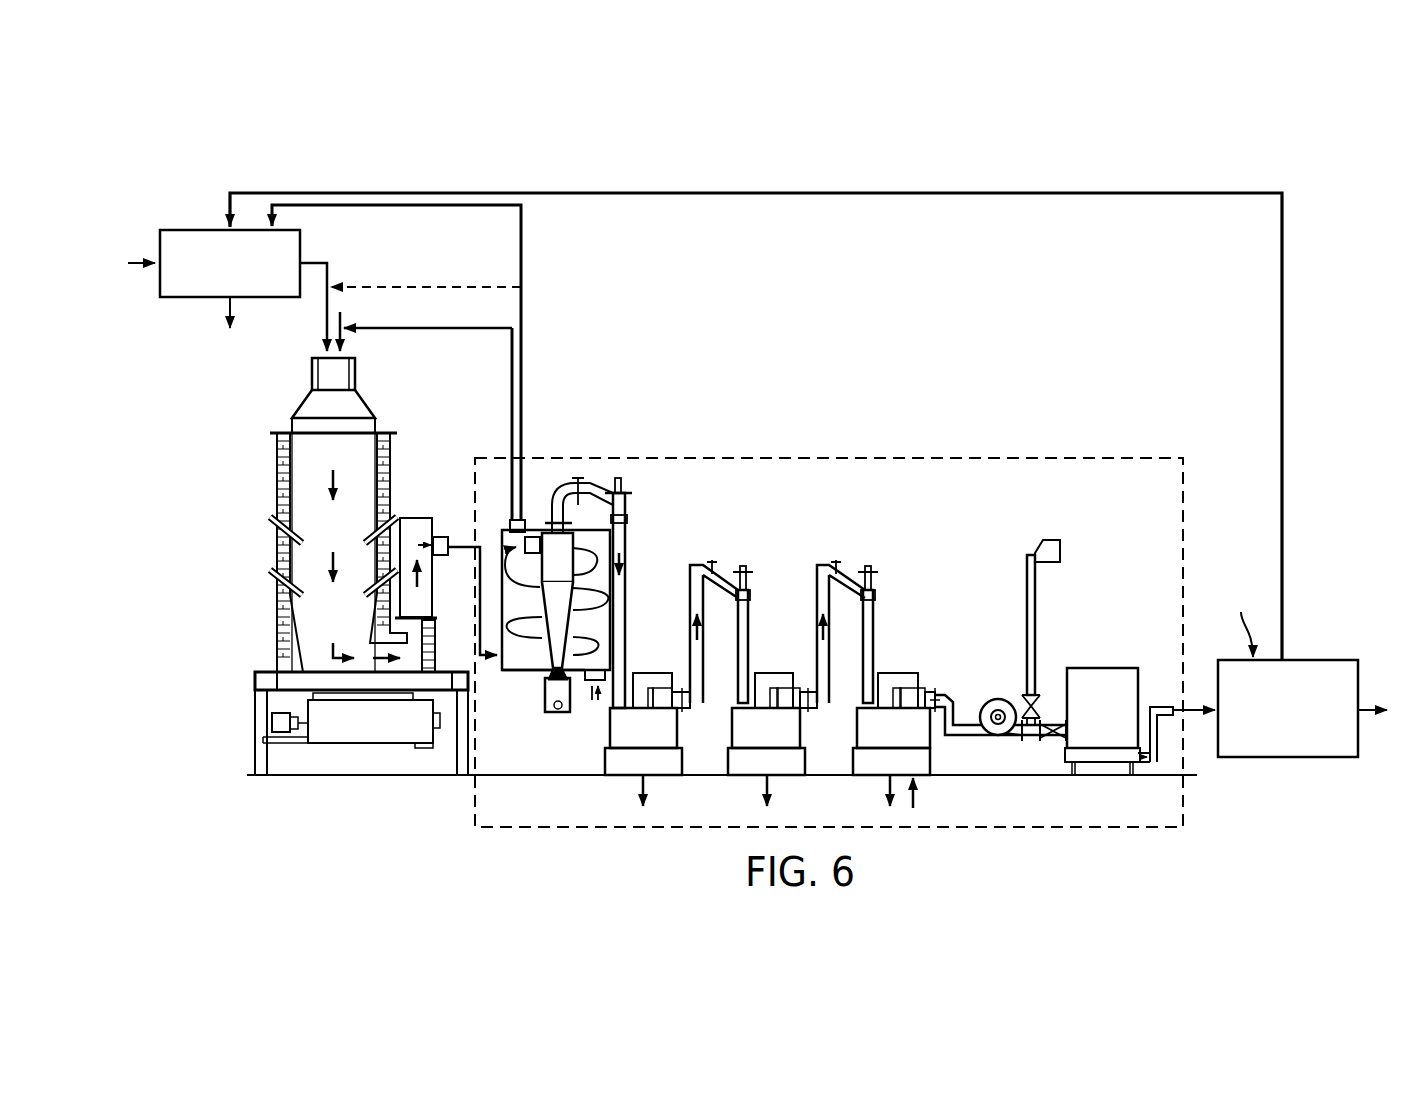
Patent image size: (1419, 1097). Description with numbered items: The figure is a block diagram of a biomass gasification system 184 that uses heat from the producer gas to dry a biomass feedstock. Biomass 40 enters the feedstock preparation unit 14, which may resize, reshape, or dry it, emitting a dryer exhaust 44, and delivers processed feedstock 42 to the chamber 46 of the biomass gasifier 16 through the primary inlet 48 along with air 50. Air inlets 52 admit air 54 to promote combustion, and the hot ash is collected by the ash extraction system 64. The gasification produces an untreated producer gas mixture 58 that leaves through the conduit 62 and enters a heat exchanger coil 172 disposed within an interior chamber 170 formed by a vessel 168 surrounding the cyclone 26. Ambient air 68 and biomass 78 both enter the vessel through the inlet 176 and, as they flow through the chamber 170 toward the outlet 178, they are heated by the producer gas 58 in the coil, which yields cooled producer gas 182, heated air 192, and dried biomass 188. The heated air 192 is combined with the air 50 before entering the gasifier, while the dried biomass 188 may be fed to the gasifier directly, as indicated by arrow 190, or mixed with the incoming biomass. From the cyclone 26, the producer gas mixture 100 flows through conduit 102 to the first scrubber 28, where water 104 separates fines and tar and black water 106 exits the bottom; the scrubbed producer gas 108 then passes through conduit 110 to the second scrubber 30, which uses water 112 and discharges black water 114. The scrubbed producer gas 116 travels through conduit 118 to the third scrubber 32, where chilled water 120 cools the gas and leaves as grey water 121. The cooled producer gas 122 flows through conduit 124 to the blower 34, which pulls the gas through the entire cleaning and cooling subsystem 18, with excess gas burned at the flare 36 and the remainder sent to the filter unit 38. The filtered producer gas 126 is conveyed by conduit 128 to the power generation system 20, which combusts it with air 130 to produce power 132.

The feedstock preparation unit 14 is at (204, 229).
The biomass gasifier 16 is at (394, 419).
The cleaning and cooling subsystem 18 is at (842, 457).
The power generation system 20 is at (1285, 757).
The cyclone 26 is at (574, 606).
The first scrubber 28 is at (678, 733).
The second scrubber 30 is at (802, 733).
The third scrubber 32 is at (932, 735).
The blower 34 is at (992, 701).
The flare 36 is at (1062, 550).
The filter unit 38 is at (1100, 668).
The biomass 40 is at (133, 262).
The processed feedstock 42 is at (316, 262).
The dryer exhaust 44 is at (229, 312).
The chamber 46 is at (310, 450).
The primary inlet 48 is at (357, 375).
The air 50 is at (341, 313).
The air inlets 52 is at (278, 514).
The air 54 is at (266, 517).
The untreated producer gas mixture 58 is at (449, 546).
The conduit 62 is at (437, 555).
The ash extraction system 64 is at (334, 751).
The ambient air 68 is at (592, 696).
The biomass 78 is at (600, 705).
The producer gas mixture 100 is at (626, 562).
The conduit 102 is at (628, 545).
The water 104 is at (603, 725).
The black water 106 is at (641, 795).
The scrubbed producer gas 108 is at (703, 630).
The conduit 110 is at (690, 595).
The water 112 is at (727, 730).
The black water 114 is at (763, 793).
The scrubbed producer gas 116 is at (818, 632).
The conduit 118 is at (817, 598).
The chilled water 120 is at (915, 800).
The grey water 121 is at (888, 793).
The cooled producer gas 122 is at (928, 690).
The conduit 124 is at (937, 695).
The filtered producer gas 126 is at (1196, 705).
The conduit 128 is at (1163, 705).
The air 130 is at (1243, 621).
The power 132 is at (1372, 712).
The vessel 168 is at (540, 528).
The interior chamber 170 is at (500, 538).
The heat exchanger coil 172 is at (520, 658).
The inlet 176 is at (602, 695).
The outlet 178 is at (507, 528).
The cooled producer gas 182 is at (526, 520).
The biomass gasification system 184 is at (1150, 168).
The dried biomass 188 is at (522, 378).
The arrow 190 is at (450, 285).
The heated air 192 is at (511, 378).